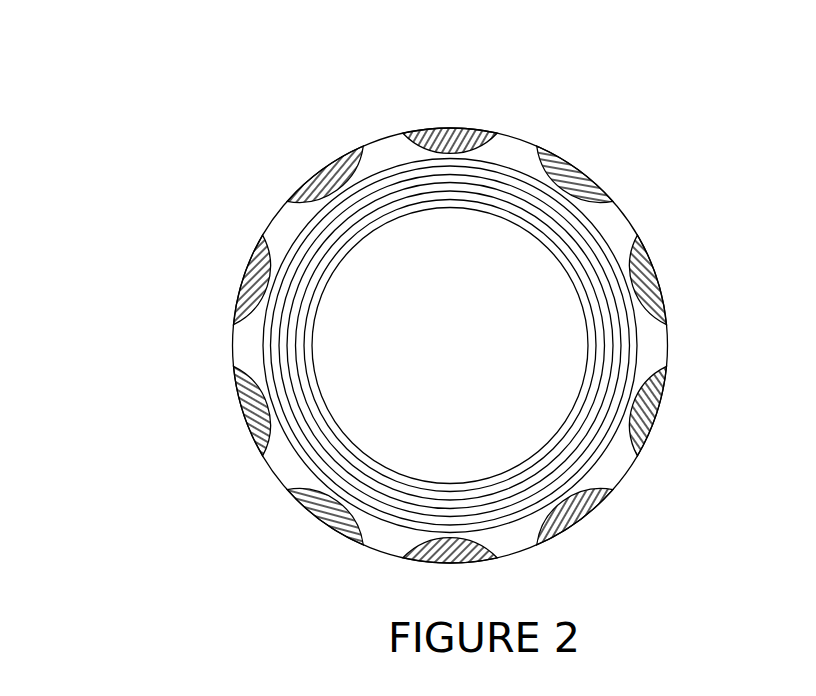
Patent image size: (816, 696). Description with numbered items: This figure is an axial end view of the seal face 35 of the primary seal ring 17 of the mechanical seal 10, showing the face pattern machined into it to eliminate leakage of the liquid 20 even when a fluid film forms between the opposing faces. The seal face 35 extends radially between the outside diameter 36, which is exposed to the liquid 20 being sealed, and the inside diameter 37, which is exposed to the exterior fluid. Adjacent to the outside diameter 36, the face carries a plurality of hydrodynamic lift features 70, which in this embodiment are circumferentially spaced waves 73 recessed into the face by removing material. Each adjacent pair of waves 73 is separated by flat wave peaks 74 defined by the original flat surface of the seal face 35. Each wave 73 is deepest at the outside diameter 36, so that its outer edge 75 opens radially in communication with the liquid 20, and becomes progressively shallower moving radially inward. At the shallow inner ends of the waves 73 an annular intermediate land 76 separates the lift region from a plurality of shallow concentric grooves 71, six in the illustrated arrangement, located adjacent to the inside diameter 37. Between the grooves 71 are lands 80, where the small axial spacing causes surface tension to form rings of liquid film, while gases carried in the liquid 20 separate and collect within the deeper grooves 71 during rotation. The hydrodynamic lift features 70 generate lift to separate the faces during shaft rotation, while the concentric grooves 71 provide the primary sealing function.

The mechanical seal 10 is at (106, 297).
The liquid being sealed 20 is at (778, 273).
The seal ring 17 is at (623, 233).
The seal face 35 is at (508, 147).
The outside diameter 36 is at (532, 153).
The inside diameter 37 is at (578, 293).
The hydrodynamic lift features 70 is at (310, 172).
The concentric grooves 71 is at (360, 233).
The waves 73 is at (428, 128).
The wave peaks 74 is at (633, 228).
The outer edge 75 is at (345, 152).
The intermediate land 76 is at (455, 153).
The lands 80 is at (383, 517).